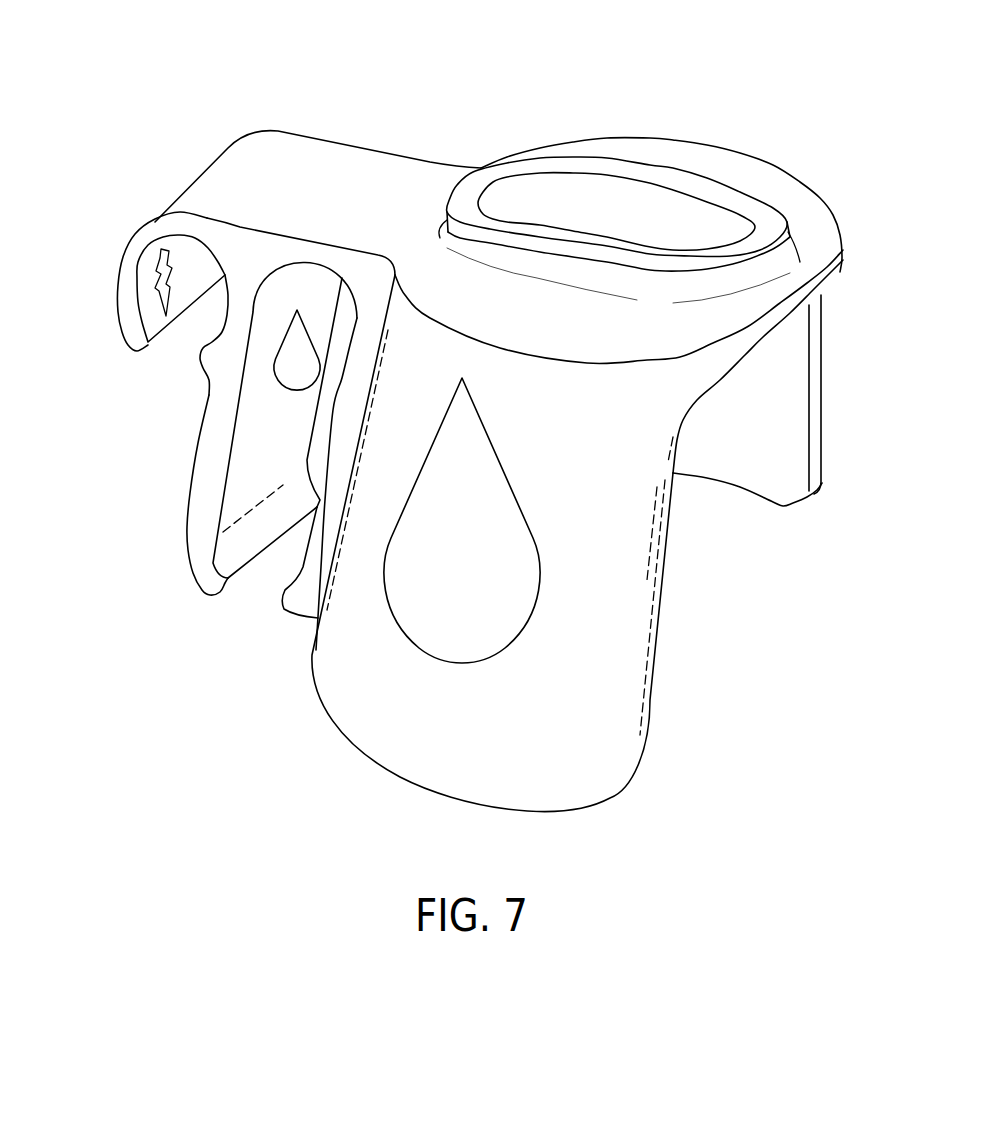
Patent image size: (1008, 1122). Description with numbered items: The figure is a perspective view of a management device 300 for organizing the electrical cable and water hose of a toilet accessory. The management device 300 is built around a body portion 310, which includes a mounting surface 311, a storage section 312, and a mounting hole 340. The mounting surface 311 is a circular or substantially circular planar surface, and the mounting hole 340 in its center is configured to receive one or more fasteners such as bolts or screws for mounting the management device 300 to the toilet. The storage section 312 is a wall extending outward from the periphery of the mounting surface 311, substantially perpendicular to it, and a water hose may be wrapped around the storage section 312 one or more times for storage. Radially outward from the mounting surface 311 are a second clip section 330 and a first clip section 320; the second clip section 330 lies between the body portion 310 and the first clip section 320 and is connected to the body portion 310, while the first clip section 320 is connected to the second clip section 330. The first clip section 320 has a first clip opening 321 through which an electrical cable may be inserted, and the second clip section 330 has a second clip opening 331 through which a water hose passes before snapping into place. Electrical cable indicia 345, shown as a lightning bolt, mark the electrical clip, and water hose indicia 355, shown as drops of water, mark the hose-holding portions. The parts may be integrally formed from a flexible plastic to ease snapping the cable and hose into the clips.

The management device 300 is at (330, 53).
The body portion 310 is at (834, 176).
The mounting surface 311 is at (548, 327).
The storage section 312 is at (579, 720).
The first clip section 320 is at (173, 230).
The first clip opening 321 is at (178, 357).
The second clip section 330 is at (323, 247).
The second clip opening 331 is at (247, 597).
The mounting hole 340 is at (627, 203).
The electrical cable indicia 345 is at (157, 277).
The water hose indicia 355 is at (279, 382).